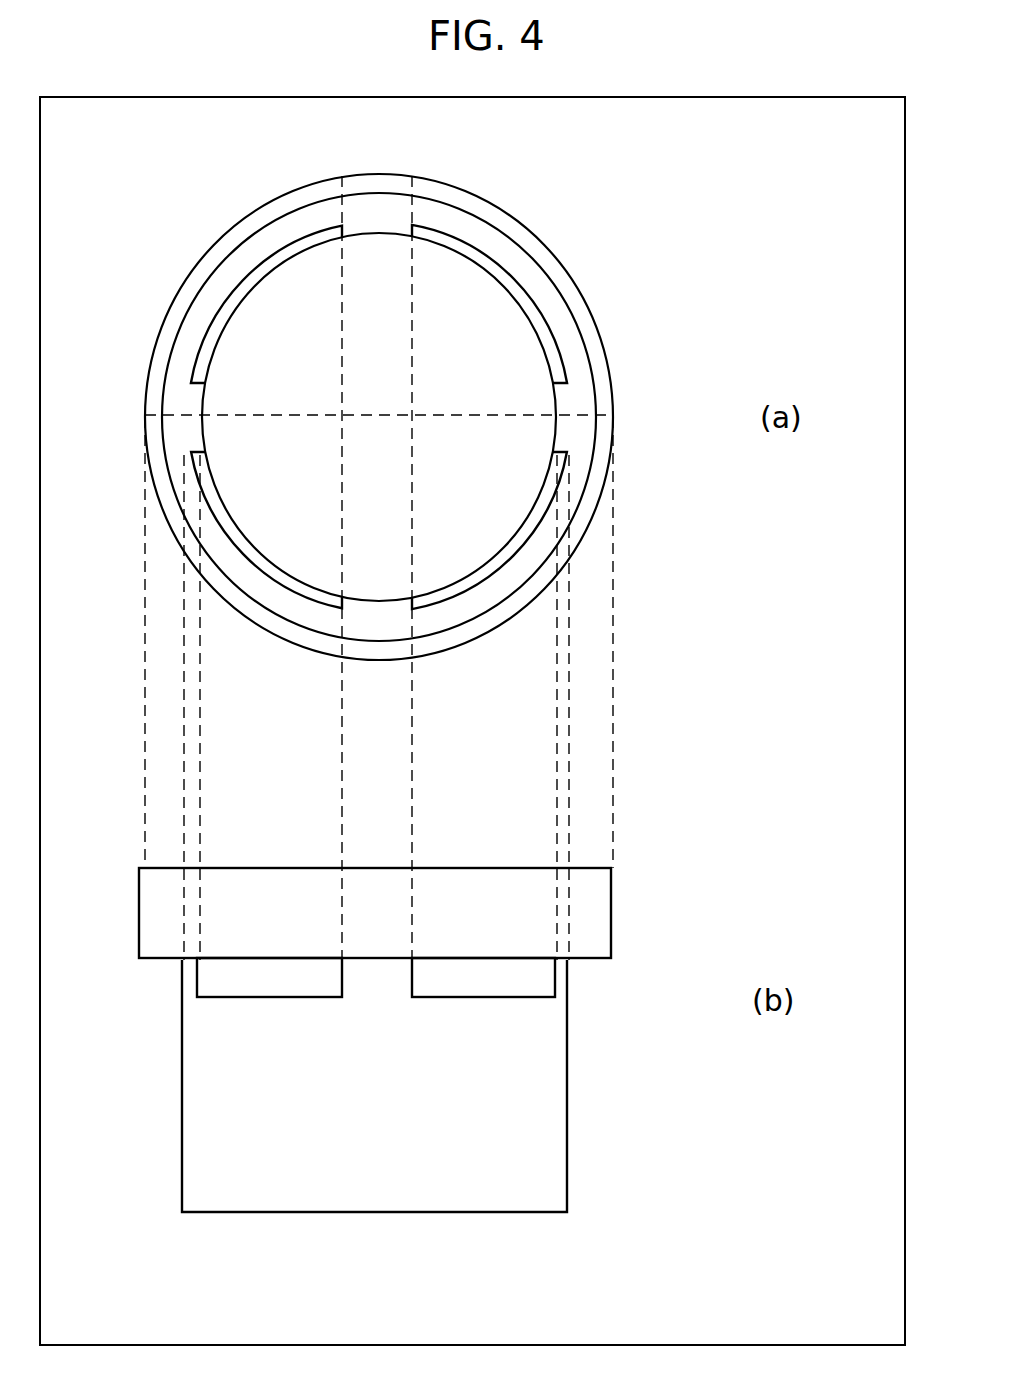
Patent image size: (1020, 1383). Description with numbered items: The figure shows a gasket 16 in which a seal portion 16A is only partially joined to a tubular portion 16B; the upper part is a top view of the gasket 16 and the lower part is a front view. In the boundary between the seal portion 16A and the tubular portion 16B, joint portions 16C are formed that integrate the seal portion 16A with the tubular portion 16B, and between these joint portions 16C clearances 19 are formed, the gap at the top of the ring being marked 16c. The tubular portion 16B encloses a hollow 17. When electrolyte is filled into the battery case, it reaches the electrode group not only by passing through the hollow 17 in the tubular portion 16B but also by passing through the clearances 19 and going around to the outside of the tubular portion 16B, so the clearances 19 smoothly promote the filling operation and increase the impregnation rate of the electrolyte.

The gasket 16 is at (590, 188).
The seal portion 16A is at (565, 284).
The tubular portion 16B is at (510, 557).
The joint portions 16C is at (565, 399).
The gap between connecting tabs 16c is at (385, 226).
The hollow 17 is at (273, 335).
The clearances 19 is at (475, 595).